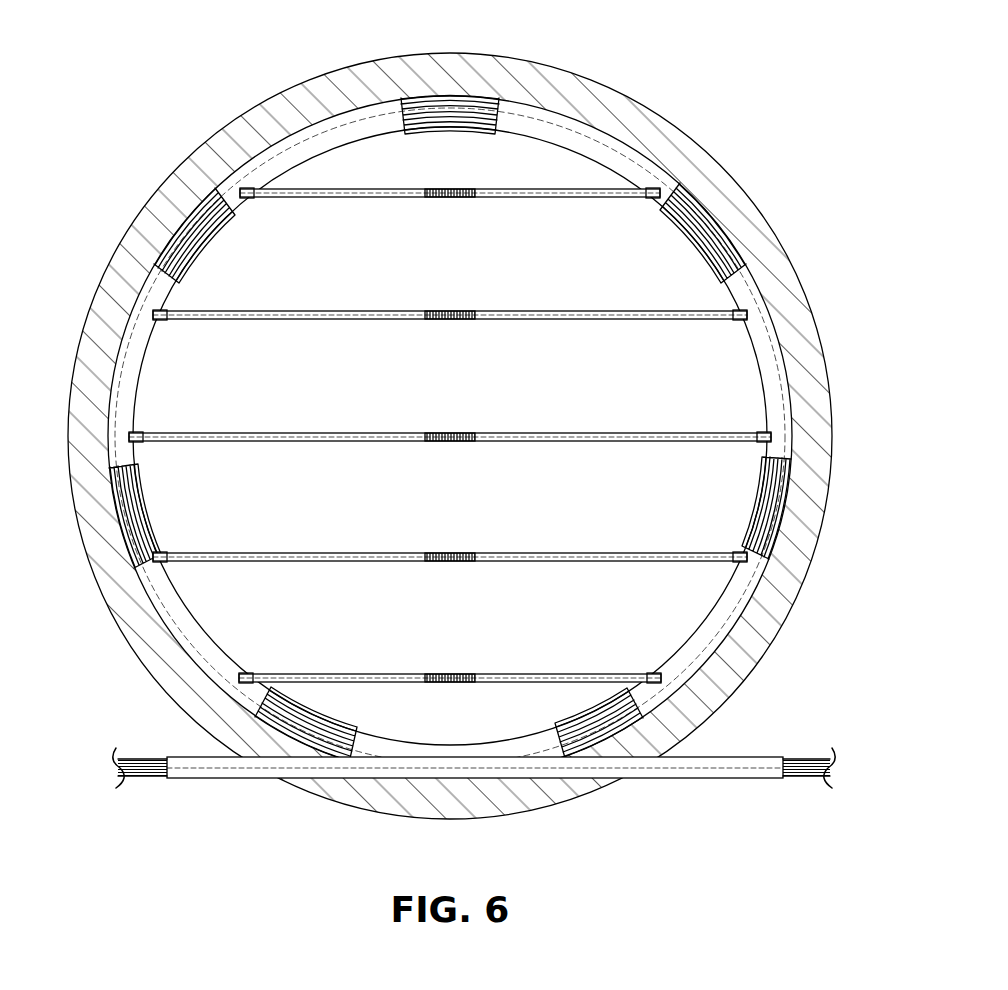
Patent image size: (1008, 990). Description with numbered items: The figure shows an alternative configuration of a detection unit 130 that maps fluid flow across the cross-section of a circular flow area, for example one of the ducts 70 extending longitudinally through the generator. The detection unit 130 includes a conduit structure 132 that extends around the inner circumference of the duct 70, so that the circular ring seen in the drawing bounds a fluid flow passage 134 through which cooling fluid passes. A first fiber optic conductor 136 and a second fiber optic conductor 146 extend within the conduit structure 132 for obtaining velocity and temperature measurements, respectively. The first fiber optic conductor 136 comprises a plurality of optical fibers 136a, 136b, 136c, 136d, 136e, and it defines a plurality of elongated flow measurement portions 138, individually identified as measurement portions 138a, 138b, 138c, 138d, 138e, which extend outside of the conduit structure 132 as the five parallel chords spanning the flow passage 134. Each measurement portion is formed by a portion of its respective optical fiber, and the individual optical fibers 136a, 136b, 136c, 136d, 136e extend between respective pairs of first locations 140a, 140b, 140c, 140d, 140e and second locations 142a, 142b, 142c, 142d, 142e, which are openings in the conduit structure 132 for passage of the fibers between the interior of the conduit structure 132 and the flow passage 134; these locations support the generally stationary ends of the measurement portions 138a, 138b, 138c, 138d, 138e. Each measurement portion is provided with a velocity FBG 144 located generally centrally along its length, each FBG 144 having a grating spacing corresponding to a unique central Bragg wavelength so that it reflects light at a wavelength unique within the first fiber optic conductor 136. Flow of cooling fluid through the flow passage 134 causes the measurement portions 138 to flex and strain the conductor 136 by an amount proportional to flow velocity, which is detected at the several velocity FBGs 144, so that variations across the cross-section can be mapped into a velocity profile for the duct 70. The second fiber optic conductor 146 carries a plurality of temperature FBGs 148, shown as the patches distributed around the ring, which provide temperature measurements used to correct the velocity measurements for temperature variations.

The duct 70 is at (632, 98).
The detection unit 130 is at (475, 392).
The conduit structure 132 is at (463, 766).
The fluid flow passage 134 is at (672, 226).
The first fiber optic conductor 136 is at (142, 757).
The optical fiber 136a is at (542, 190).
The optical fiber 136b is at (610, 311).
The optical fiber 136c is at (565, 433).
The optical fiber 136d is at (570, 553).
The optical fiber 136e is at (560, 674).
The elongated flow measurement portions 138 is at (487, 412).
The measurement portion 138a is at (335, 190).
The measurement portion 138b is at (330, 311).
The measurement portion 138c is at (348, 433).
The measurement portion 138d is at (318, 553).
The measurement portion 138e is at (362, 674).
The first location 140a is at (242, 198).
The first location 140b is at (165, 320).
The first location 140c is at (137, 433).
The first location 140d is at (165, 553).
The first location 140e is at (248, 674).
The second location 142a is at (658, 198).
The second location 142b is at (738, 311).
The second location 142c is at (752, 433).
The second location 142d is at (735, 553).
The second location 142e is at (658, 674).
The velocity FBG 144 is at (452, 311).
The second fiber optic conductor 146 is at (137, 777).
The temperature FBG 148 is at (446, 96).